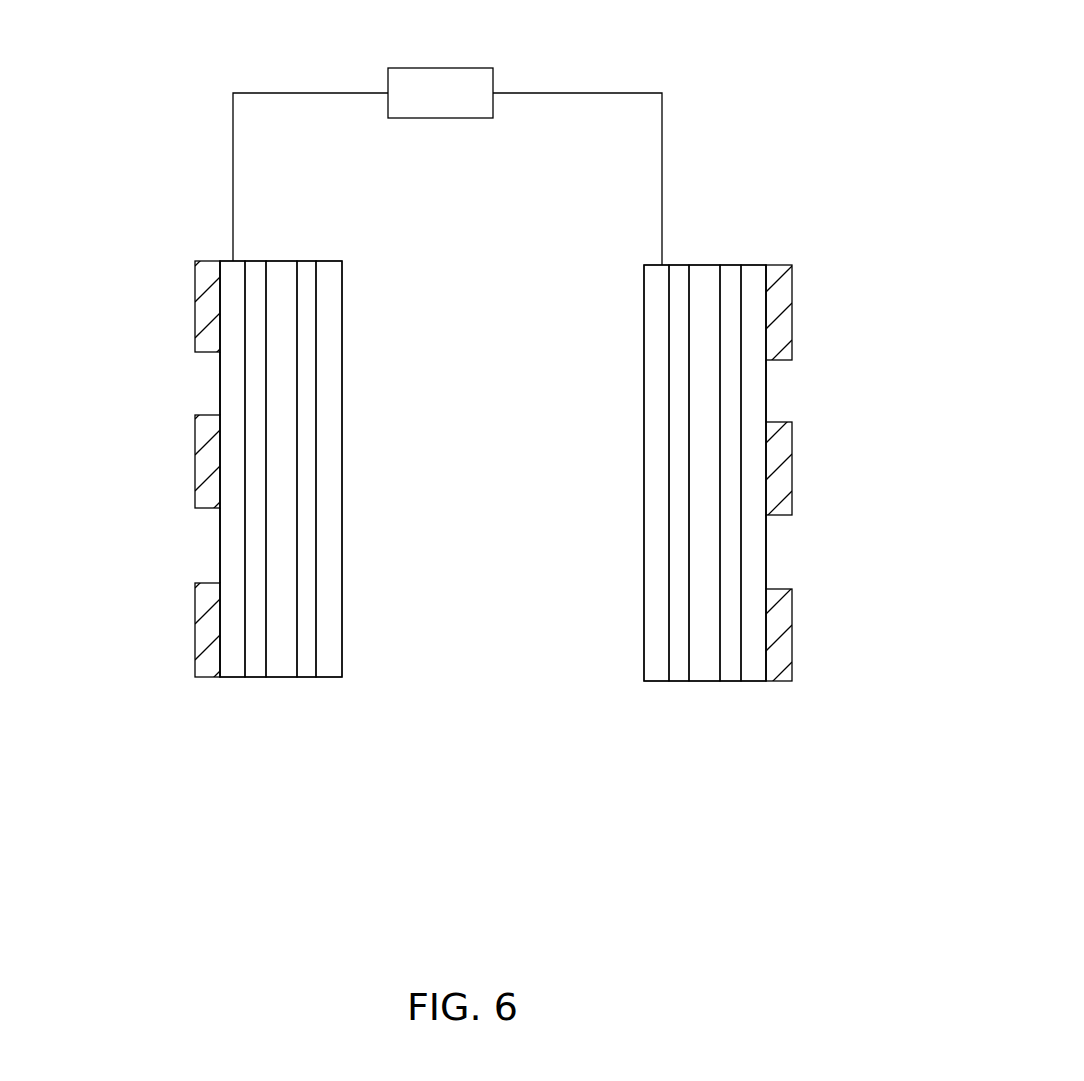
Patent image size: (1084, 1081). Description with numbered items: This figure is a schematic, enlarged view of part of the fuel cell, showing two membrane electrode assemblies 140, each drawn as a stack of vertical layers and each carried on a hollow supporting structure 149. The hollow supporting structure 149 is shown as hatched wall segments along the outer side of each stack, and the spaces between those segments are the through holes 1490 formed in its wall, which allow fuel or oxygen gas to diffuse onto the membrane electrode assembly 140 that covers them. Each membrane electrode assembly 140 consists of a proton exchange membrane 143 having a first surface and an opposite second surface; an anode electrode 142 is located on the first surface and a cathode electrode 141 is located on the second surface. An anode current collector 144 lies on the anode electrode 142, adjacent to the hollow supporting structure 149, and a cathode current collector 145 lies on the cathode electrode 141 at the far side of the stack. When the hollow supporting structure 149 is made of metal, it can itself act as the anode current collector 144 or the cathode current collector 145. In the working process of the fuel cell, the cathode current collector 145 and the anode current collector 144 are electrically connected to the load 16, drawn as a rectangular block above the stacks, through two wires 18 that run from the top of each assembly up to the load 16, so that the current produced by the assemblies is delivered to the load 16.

The load 16 is at (450, 68).
The wire 18 is at (598, 93).
The membrane electrode assembly 140 is at (203, 243).
The cathode electrode 141 is at (302, 665).
The anode electrode 142 is at (255, 663).
The proton exchange membrane 143 is at (275, 662).
The anode current collector 144 is at (232, 670).
The cathode current collector 145 is at (330, 628).
The hollow supporting structure 149 is at (203, 305).
The through hole 1490 is at (205, 392).